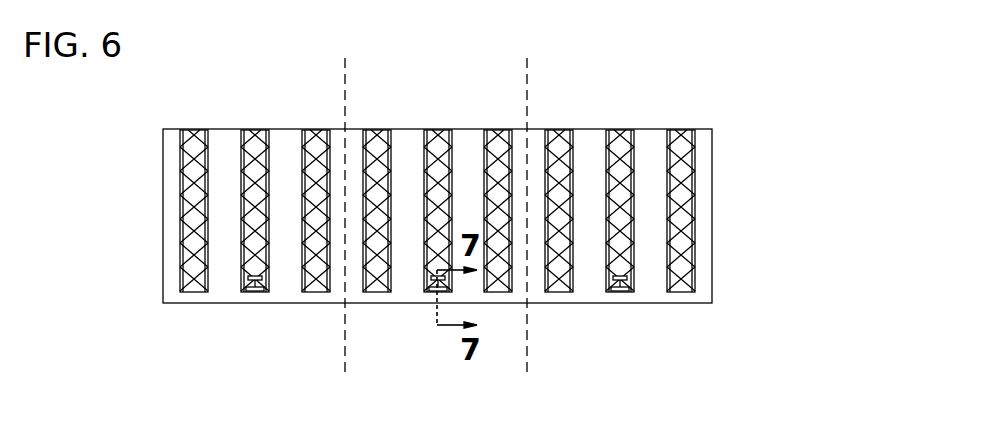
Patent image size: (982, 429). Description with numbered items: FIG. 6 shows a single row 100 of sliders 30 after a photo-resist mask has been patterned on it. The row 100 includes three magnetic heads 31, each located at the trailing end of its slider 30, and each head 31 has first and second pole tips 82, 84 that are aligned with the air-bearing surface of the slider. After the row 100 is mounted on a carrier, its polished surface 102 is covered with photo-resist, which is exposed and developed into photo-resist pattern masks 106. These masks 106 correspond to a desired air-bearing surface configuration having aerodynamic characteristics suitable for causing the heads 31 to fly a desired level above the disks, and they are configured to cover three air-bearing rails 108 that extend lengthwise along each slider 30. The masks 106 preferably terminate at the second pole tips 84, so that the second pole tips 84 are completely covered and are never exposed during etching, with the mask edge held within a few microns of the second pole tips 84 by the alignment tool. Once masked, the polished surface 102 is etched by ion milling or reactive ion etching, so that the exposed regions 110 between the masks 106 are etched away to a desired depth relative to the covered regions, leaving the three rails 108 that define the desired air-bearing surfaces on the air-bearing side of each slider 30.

The slider 30 is at (405, 113).
The magnetic head 31 is at (243, 309).
The first pole tip 82 is at (693, 343).
The second pole tip 84 is at (254, 293).
The row 100 is at (462, 220).
The polished surface 102 is at (545, 120).
The photo-resist pattern mask 106 is at (264, 111).
The rail 108 is at (192, 128).
The exposed region 110 is at (653, 135).